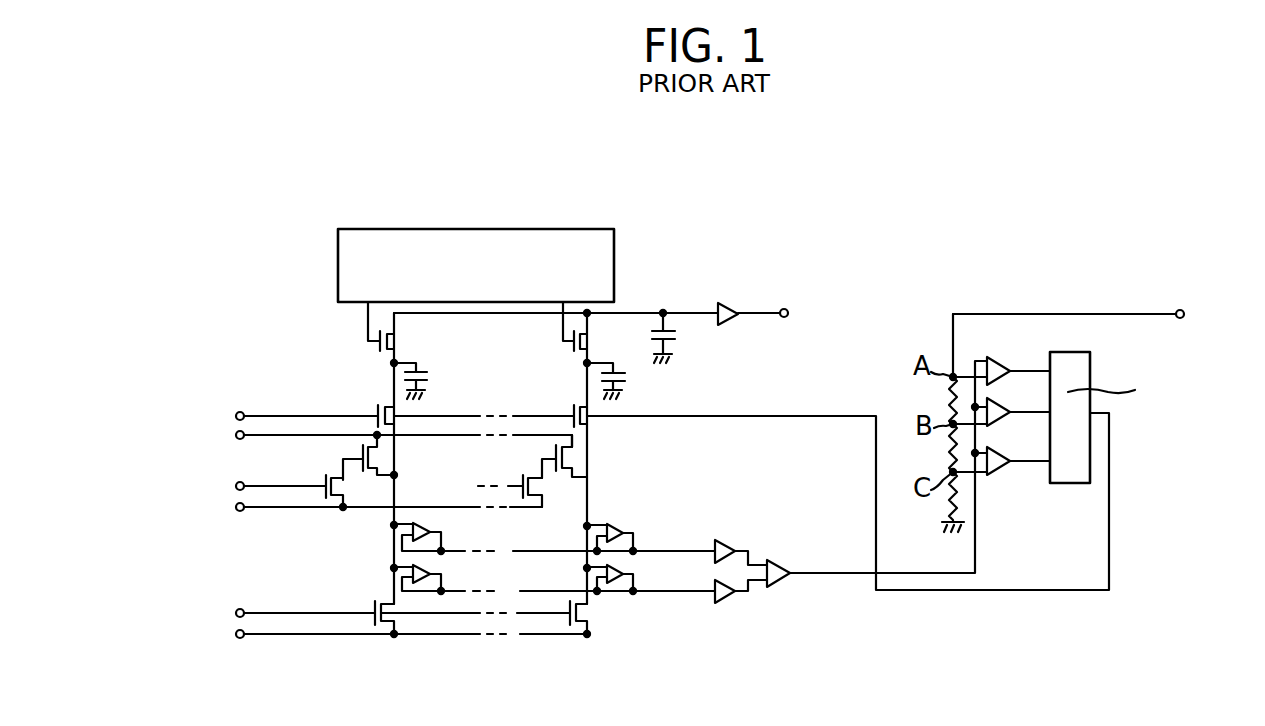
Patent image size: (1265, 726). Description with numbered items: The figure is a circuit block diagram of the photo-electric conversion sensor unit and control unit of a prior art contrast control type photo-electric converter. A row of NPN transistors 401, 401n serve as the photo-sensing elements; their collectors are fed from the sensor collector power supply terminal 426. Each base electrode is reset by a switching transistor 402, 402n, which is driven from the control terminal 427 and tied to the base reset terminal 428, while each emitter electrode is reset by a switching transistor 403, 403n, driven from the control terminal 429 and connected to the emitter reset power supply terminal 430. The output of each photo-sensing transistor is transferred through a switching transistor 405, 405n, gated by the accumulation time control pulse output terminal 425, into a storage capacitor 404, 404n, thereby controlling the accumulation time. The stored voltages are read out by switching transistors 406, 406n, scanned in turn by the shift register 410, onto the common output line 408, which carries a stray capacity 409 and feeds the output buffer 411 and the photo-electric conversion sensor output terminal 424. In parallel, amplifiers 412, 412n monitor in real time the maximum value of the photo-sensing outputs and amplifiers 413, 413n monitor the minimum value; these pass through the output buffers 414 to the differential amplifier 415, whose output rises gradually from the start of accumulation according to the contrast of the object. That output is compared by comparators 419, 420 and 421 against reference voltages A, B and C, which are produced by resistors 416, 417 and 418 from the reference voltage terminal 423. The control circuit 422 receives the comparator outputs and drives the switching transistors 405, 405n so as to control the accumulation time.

The NPN transistor 401 is at (379, 461).
The NPN transistor 401n is at (574, 462).
The switching transistor 402 is at (326, 472).
The switching transistor 402n is at (522, 478).
The switching transistor 403 is at (373, 600).
The switching transistor 403n is at (588, 615).
The capacitor 404 is at (428, 376).
The capacitor 404n is at (627, 378).
The switching transistor 405 is at (377, 405).
The switching transistor 405n is at (588, 421).
The switching transistor 406 is at (396, 344).
The switching transistor 406n is at (584, 338).
The common output line 408 is at (508, 316).
The stray capacity 409 is at (677, 336).
The shift register 410 is at (594, 225).
The output buffer 411 is at (735, 304).
The amplifier 412 is at (433, 528).
The amplifier 412n is at (610, 524).
The amplifier 413 is at (433, 571).
The amplifier 413n is at (625, 571).
The output buffer 414 is at (730, 545).
The differential amplifier 415 is at (785, 570).
The resistor 416 is at (953, 400).
The resistor 417 is at (953, 457).
The resistor 418 is at (952, 499).
The comparator 419 is at (1004, 358).
The comparator 420 is at (1005, 418).
The comparator 421 is at (995, 474).
The control circuit 422 is at (1091, 368).
The reference voltage terminal 423 is at (1096, 315).
The photo-electric conversion sensor output terminal 424 is at (810, 315).
The accumulation time control pulse output terminal 425 is at (639, 496).
The sensor collector power supply terminal 426 is at (371, 438).
The control terminal 427 is at (346, 485).
The base reset terminal 428 is at (356, 508).
The control terminal 429 is at (370, 612).
The emitter reset power supply terminal 430 is at (380, 635).